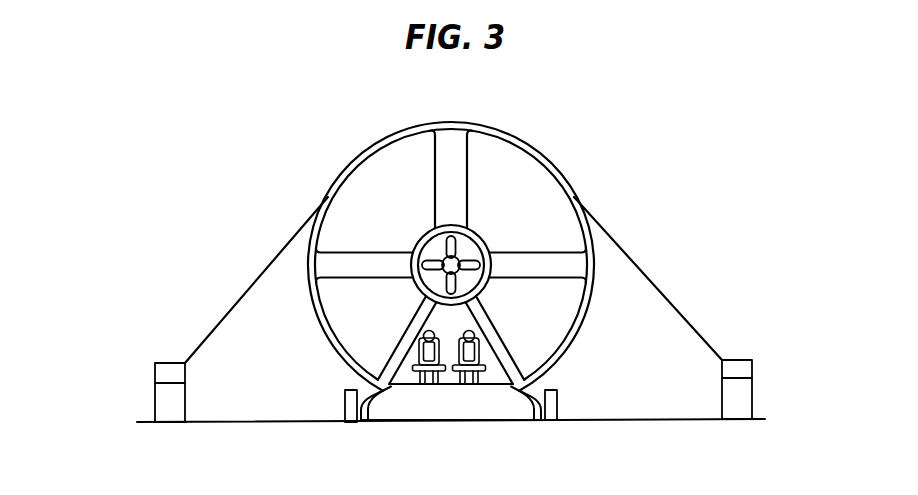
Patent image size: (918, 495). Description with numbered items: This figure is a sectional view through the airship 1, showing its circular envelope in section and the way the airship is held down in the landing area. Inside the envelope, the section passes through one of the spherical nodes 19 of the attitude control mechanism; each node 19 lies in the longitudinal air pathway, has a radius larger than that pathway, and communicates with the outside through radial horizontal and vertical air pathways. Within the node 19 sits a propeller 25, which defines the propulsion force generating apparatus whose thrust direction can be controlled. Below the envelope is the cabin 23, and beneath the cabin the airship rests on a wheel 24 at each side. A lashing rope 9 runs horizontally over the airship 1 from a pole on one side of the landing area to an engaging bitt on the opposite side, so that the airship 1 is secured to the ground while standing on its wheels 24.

The airship 1 is at (444, 253).
The lashing rope 9 is at (632, 257).
The node 19 is at (466, 247).
The cabin 23 is at (495, 363).
The wheel 24 is at (345, 400).
The propeller 25 is at (451, 241).